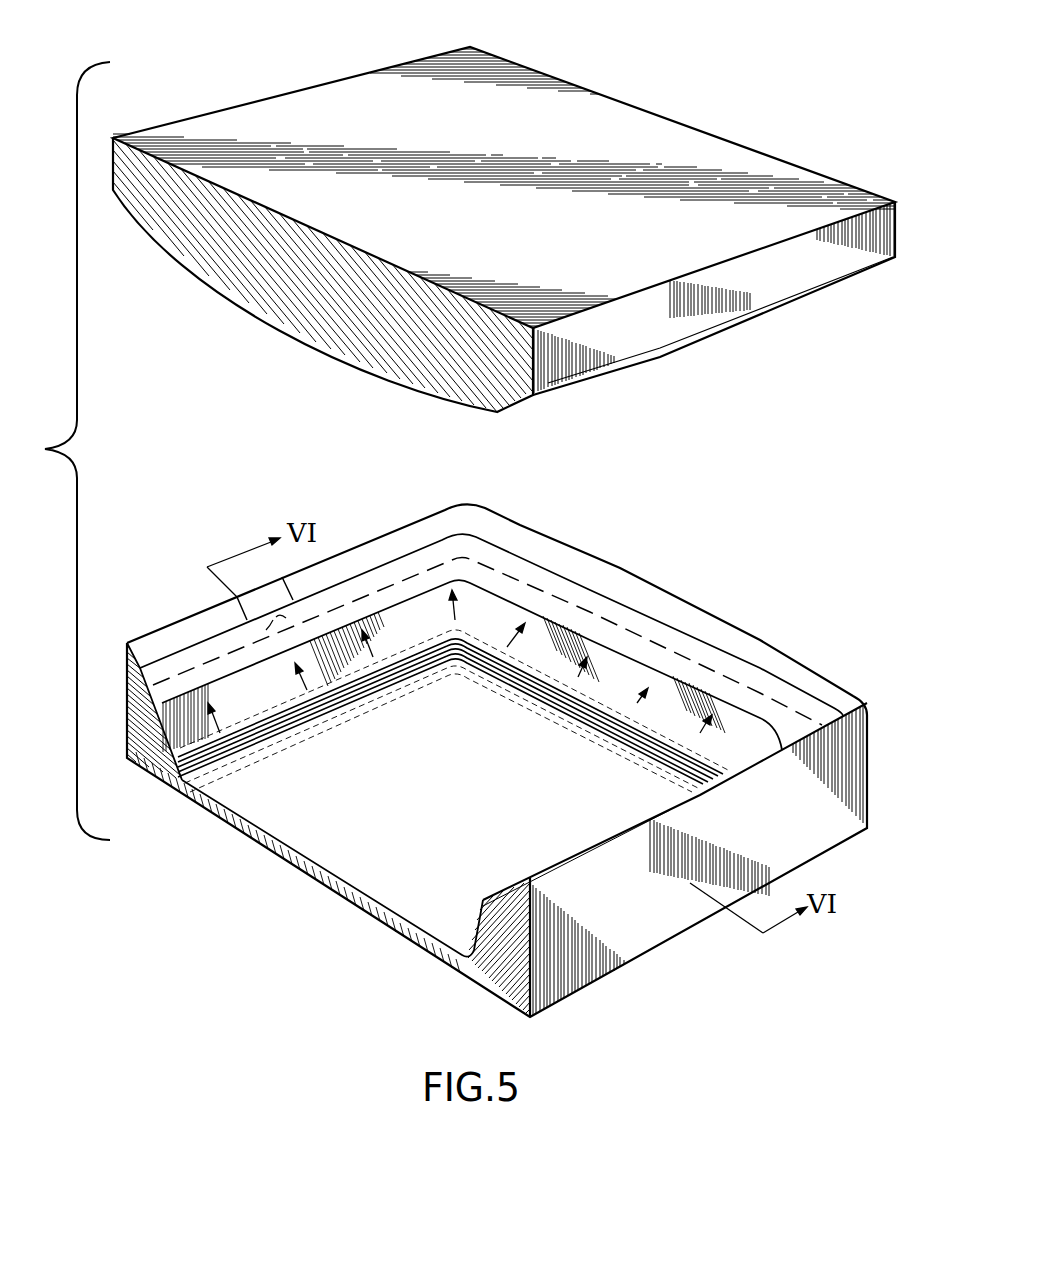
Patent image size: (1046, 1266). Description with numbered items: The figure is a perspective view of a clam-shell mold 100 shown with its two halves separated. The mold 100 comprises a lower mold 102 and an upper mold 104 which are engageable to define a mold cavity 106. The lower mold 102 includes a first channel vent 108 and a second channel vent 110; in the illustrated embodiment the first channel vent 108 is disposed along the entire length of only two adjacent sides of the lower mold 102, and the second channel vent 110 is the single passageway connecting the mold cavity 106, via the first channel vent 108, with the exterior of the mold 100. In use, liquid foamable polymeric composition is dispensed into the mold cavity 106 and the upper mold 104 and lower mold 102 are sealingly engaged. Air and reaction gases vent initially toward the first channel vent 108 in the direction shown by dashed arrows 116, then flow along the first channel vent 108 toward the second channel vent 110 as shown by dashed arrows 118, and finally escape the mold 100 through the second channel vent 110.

The mold 100 is at (724, 102).
The lower mold 102 is at (823, 830).
The upper mold 104 is at (802, 272).
The mold cavity 106 is at (492, 820).
The first channel vent 108 is at (397, 550).
The second channel vent 110 is at (240, 602).
The dashed arrows 116 is at (293, 738).
The dashed arrows 118 is at (187, 688).